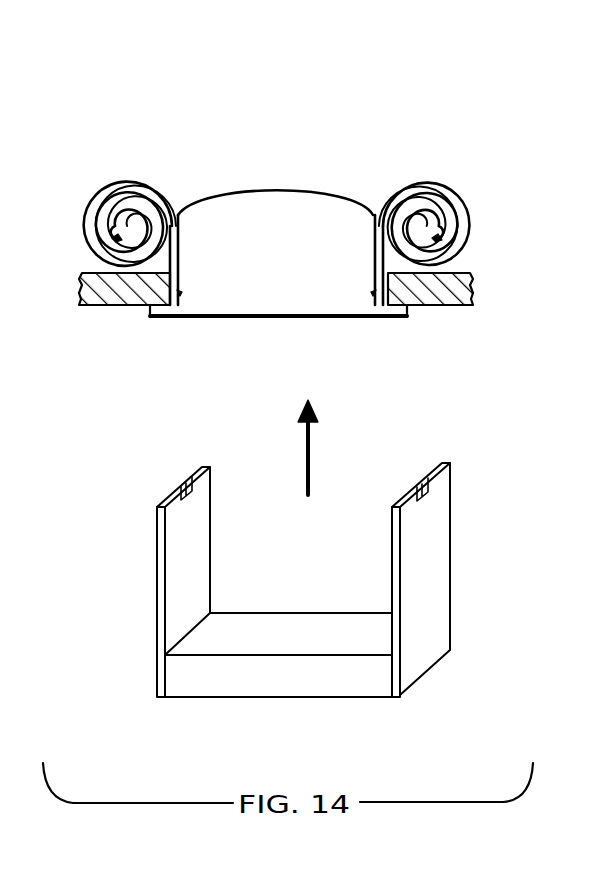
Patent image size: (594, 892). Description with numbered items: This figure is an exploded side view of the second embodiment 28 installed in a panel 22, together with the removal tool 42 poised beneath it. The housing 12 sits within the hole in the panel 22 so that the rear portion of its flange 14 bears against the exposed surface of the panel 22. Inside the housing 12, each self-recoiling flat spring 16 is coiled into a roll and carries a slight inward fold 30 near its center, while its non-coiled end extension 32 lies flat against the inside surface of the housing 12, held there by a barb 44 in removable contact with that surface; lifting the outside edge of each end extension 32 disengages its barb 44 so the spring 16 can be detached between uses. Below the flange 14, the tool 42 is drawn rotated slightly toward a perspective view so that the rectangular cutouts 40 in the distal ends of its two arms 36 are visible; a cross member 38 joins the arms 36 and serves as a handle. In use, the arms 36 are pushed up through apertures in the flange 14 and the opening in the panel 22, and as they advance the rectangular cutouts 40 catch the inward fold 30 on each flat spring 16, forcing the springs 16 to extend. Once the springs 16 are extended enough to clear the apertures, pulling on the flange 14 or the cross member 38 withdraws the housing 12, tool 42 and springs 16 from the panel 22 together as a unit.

The housing 12 is at (278, 190).
The flange 14 is at (392, 308).
The self-recoiling flat spring 16 is at (133, 179).
The panel 22 is at (114, 296).
The second embodiment 28 is at (196, 118).
The slight inward fold 30 is at (100, 252).
The non-coiled end extension 32 is at (180, 296).
The arm 36 is at (174, 588).
The cross member 38 is at (368, 684).
The rectangular cutout 40 is at (178, 488).
The tool 42 is at (284, 584).
The barb 44 is at (181, 274).